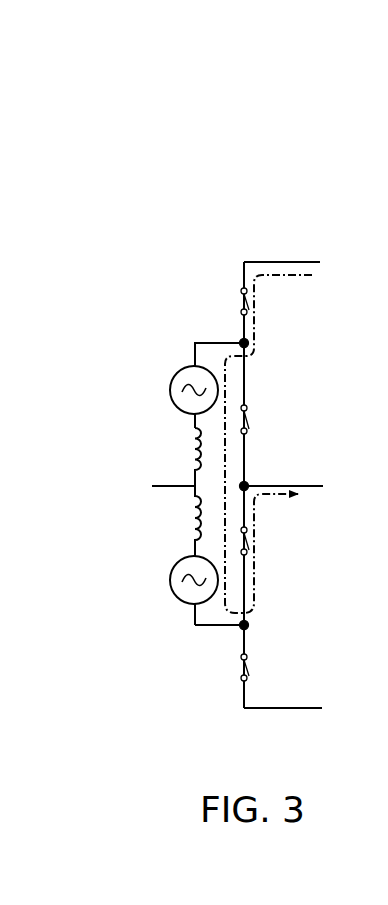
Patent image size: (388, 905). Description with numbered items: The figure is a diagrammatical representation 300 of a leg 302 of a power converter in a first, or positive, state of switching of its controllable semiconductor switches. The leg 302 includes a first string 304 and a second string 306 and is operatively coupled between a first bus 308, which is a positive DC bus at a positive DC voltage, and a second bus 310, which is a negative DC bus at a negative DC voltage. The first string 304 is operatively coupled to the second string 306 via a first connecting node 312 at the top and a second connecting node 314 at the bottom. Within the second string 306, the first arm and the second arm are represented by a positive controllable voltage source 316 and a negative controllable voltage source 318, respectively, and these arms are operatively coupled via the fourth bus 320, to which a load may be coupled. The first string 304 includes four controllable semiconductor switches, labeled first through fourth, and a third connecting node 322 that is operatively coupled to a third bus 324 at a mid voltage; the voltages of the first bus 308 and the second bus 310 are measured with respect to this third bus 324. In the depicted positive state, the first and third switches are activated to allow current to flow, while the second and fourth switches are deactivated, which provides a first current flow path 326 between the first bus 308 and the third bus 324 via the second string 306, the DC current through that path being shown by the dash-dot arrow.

The diagrammatical representation 300 is at (176, 80).
The leg 302 is at (318, 194).
The first string 304 is at (244, 696).
The second string 306 is at (196, 341).
The first bus 308 is at (262, 262).
The second bus 310 is at (312, 708).
The first connecting node 312 is at (241, 341).
The second connecting node 314 is at (248, 625).
The controllable voltage source Vp 316 is at (174, 371).
The controllable voltage source Vn 318 is at (174, 562).
The fourth bus 320 is at (173, 483).
The third connecting node 322 is at (275, 472).
The third bus 324 is at (313, 483).
The first current flow path 326 is at (228, 380).